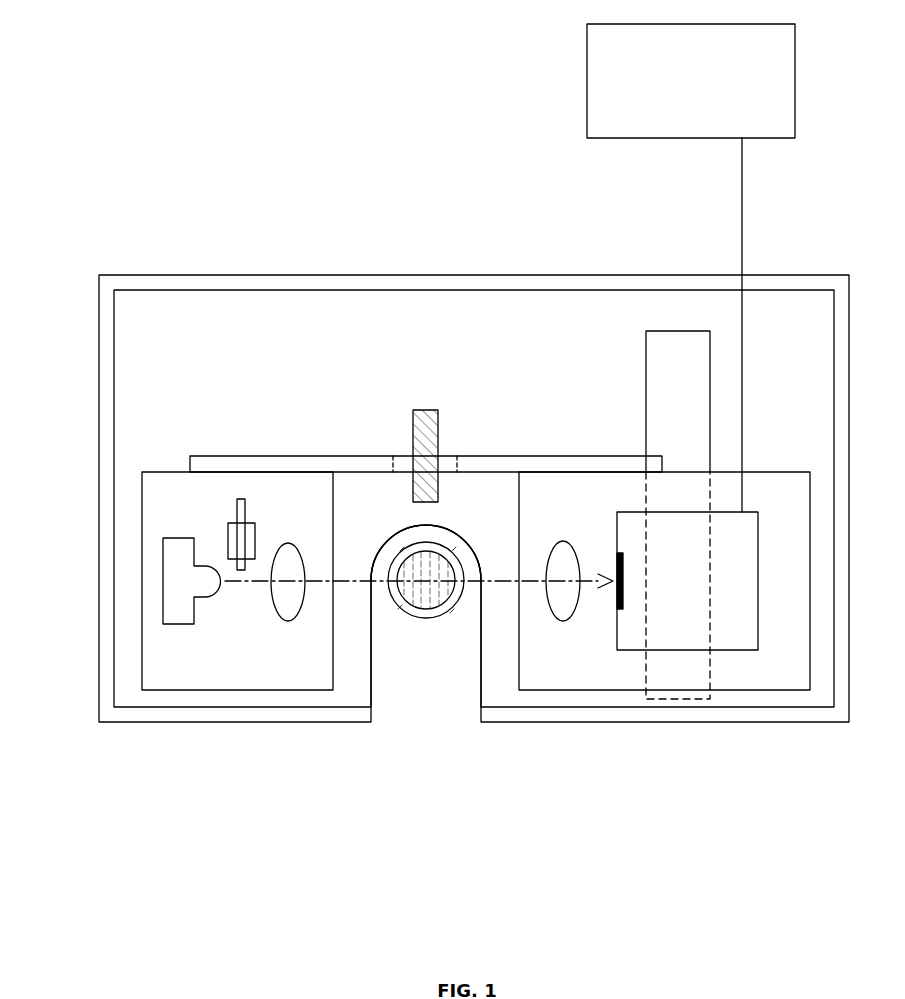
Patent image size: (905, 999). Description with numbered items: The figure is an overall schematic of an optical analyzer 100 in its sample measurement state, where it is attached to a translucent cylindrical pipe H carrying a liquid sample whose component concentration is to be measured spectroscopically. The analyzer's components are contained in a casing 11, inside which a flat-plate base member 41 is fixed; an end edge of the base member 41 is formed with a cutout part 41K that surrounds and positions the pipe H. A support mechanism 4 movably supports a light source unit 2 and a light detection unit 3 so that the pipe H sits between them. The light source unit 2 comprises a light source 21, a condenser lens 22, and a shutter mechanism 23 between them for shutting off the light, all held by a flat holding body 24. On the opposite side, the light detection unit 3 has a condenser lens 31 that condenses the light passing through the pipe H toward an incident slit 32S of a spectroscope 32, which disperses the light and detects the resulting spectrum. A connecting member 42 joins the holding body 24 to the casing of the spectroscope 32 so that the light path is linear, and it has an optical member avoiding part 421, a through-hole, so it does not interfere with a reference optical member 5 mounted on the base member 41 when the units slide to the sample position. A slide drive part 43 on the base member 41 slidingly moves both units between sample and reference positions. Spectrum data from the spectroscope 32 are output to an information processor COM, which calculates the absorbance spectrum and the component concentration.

The optical analyzer 100 is at (400, 131).
The casing 11 is at (233, 274).
The base member 41 is at (468, 290).
The cutout part 41K is at (478, 678).
The pipe H is at (428, 620).
The support mechanism 4 is at (620, 337).
The connecting member 42 is at (552, 455).
The optical member avoiding part 421 is at (452, 457).
The slide drive part 43 is at (645, 373).
The reference optical member 5 is at (426, 408).
The light source unit 2 is at (240, 691).
The holding body 24 is at (142, 555).
The light source 21 is at (178, 625).
The condenser lens 22 is at (288, 622).
The shutter mechanism 23 is at (230, 522).
The light detection unit 3 is at (596, 691).
The condenser lens 31 is at (564, 620).
The spectroscope 32 is at (738, 652).
The incident slit 32S is at (616, 575).
The information processor COM is at (587, 80).